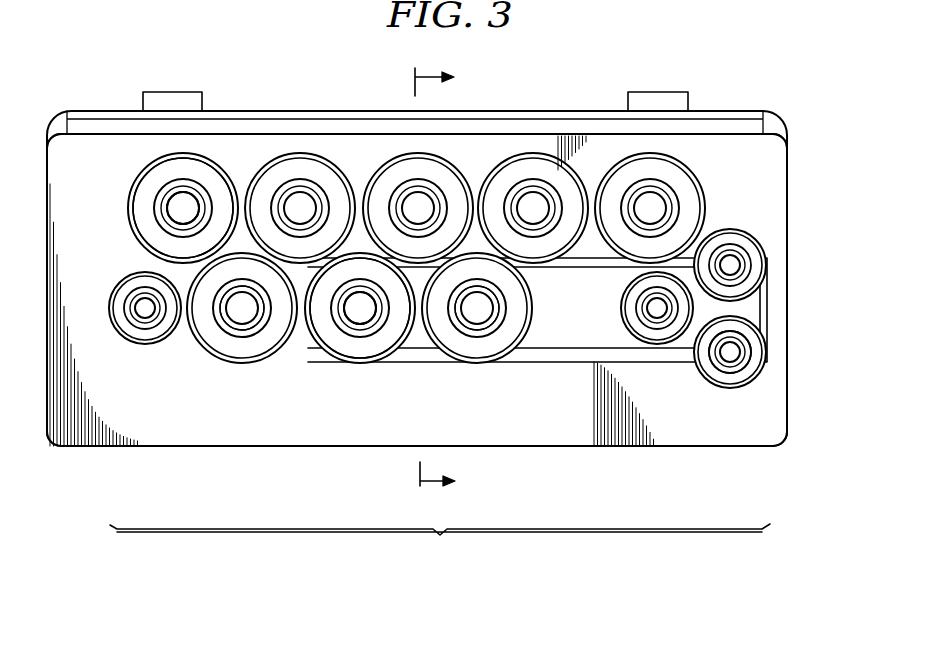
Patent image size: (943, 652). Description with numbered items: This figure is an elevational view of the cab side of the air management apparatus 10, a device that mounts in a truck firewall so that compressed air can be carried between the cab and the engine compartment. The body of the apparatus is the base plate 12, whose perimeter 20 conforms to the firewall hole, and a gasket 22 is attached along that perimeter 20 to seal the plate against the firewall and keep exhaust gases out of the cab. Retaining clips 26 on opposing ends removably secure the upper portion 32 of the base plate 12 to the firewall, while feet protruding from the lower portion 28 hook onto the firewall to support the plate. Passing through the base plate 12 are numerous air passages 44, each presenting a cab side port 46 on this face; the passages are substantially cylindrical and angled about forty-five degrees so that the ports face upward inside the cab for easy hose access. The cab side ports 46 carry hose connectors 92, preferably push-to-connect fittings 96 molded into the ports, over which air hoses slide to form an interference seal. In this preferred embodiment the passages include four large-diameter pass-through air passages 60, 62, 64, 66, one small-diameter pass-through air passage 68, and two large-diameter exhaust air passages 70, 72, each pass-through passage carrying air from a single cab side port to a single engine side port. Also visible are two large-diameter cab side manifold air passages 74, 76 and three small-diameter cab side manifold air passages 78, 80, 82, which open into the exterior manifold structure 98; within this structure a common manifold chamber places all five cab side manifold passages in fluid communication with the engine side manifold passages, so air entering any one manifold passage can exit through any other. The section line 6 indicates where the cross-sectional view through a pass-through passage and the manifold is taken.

The section line 6 is at (431, 280).
The air management apparatus 10 is at (594, 57).
The base plate 12 is at (787, 228).
The perimeter of base plate 20 is at (790, 378).
The gasket 22 is at (248, 111).
The retaining clip 26 is at (172, 92).
The lower portion of base plate 28 is at (193, 447).
The upper portion of base plate 32 is at (768, 168).
The air passage 44 is at (440, 545).
The cab side port 46 is at (178, 208).
The large-diameter pass-through air passage 60 is at (536, 154).
The large-diameter pass-through air passage 62 is at (376, 171).
The large-diameter pass-through air passage 64 is at (299, 153).
The large-diameter pass-through air passage 66 is at (245, 362).
The small-diameter pass-through air passage 68 is at (140, 345).
The large-diameter exhaust air passage 70 is at (128, 208).
The large-diameter exhaust air passage 72 is at (702, 190).
The large-diameter cab side manifold air passage 74 is at (350, 362).
The large-diameter cab side manifold air passage 76 is at (443, 353).
The small-diameter cab side manifold air passage 78 is at (730, 390).
The small-diameter cab side manifold air passage 80 is at (737, 230).
The small-diameter cab side manifold air passage 82 is at (620, 308).
The hose connector 92 is at (147, 228).
The push-to-connect fitting 96 is at (222, 320).
The manifold structure 98 is at (550, 333).